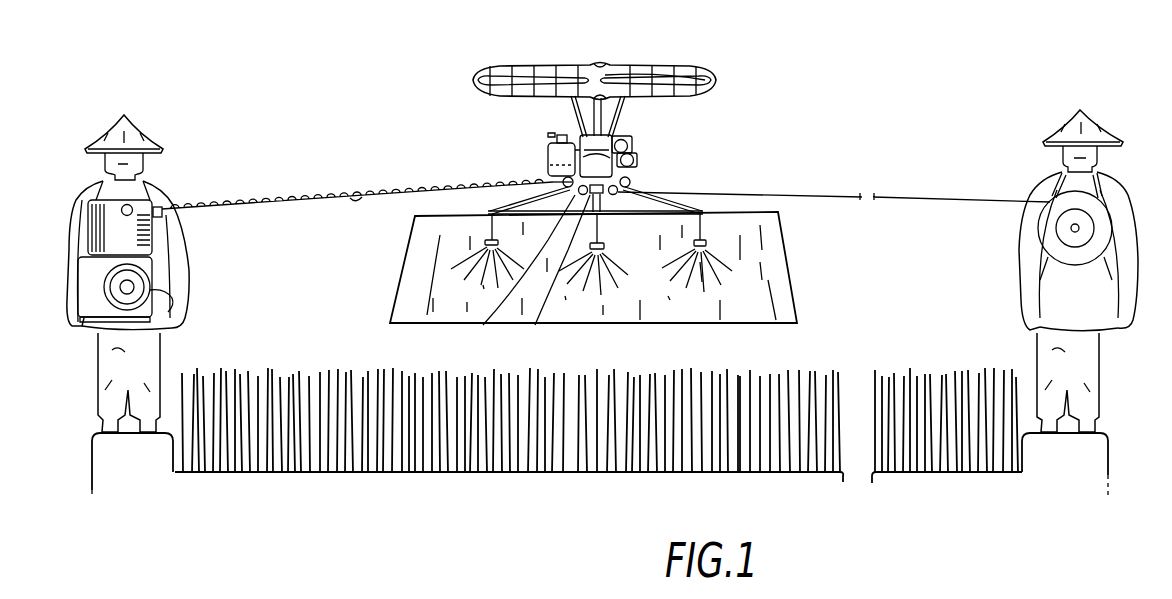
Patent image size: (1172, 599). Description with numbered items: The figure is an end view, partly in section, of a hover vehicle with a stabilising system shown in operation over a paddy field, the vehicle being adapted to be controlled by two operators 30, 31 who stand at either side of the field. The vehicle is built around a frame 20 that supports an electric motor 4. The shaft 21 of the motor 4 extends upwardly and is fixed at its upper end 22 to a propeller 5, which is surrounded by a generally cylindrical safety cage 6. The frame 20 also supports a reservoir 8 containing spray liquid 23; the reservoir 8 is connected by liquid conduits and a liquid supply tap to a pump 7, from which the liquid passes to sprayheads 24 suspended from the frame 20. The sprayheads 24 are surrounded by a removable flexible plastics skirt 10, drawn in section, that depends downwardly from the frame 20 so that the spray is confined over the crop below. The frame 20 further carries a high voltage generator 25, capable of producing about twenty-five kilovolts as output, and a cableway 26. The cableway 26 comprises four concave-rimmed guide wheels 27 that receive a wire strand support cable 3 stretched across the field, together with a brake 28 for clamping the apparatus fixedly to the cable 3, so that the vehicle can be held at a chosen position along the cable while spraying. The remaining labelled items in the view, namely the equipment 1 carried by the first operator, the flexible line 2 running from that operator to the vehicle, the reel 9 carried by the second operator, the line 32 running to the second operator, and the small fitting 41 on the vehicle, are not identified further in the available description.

The engine-driven pump unit 1 is at (150, 272).
The flexible hose 2 is at (302, 198).
The support cable 3 is at (353, 200).
The electric motor 4 is at (625, 114).
The propeller 5 is at (630, 64).
The safety cage 6 is at (718, 78).
The pump 7 is at (640, 165).
The reservoir 8 is at (548, 155).
The tether reel 9 is at (1043, 230).
The flexible plastics skirt 10 is at (797, 282).
The frame 20 is at (672, 193).
The shaft 21 is at (590, 100).
The upper end 22 is at (597, 78).
The spray liquid 23 is at (548, 170).
The sprayheads 24 is at (715, 240).
The high voltage generator 25 is at (638, 150).
The cableway 26 is at (609, 216).
The guide wheels 27 is at (511, 275).
The brake 28 is at (547, 275).
The first operator 30 is at (145, 183).
The second operator 31 is at (1062, 176).
The tether rope 32 is at (847, 192).
The fuel tank cap 41 is at (555, 150).